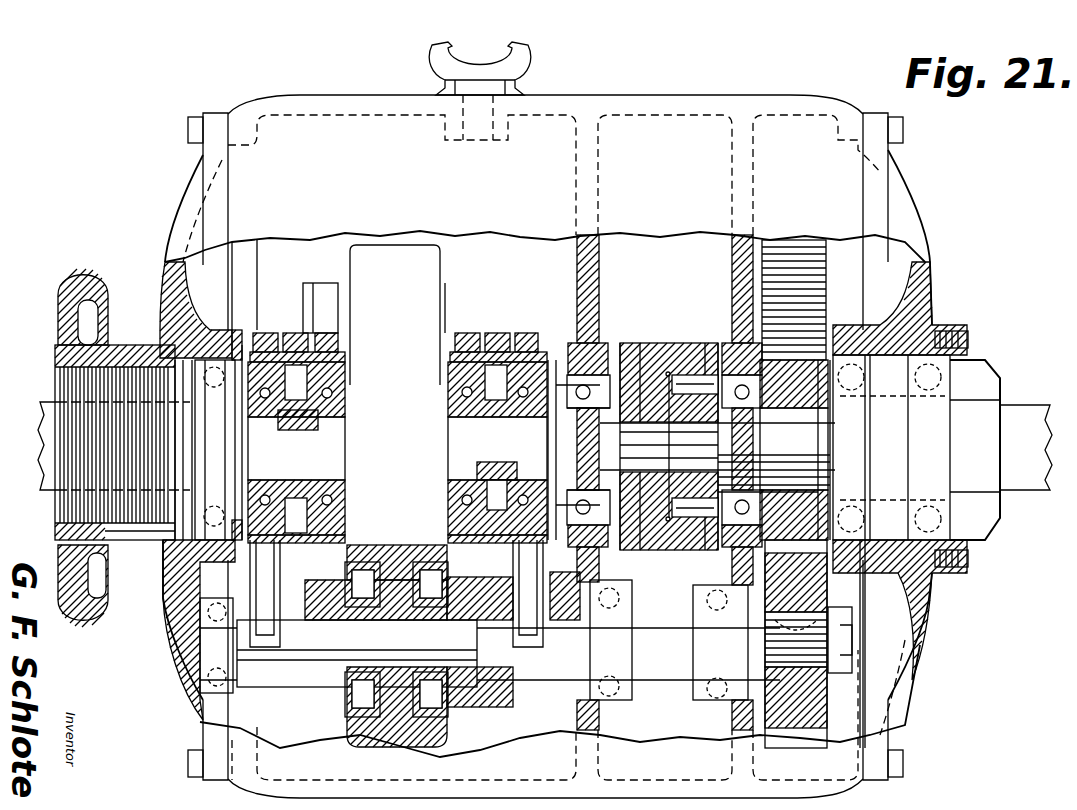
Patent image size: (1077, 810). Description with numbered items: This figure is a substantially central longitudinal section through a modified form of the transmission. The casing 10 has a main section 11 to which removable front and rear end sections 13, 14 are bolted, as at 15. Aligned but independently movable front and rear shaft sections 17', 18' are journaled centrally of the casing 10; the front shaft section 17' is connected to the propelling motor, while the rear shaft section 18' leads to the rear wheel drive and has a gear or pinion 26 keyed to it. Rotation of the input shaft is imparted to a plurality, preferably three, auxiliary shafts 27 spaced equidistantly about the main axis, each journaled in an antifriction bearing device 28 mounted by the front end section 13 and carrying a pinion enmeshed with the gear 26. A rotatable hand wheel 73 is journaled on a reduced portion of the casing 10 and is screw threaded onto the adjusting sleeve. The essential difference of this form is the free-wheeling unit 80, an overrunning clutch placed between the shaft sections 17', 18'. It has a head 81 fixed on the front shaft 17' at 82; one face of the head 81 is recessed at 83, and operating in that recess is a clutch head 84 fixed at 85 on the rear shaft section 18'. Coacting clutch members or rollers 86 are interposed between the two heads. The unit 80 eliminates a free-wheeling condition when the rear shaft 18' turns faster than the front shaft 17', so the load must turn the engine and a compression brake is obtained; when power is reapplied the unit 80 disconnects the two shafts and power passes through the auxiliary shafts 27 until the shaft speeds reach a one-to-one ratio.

The casing 10 is at (622, 95).
The main section 11 is at (357, 95).
The front end section 13 is at (182, 197).
The rear end section 14 is at (925, 225).
The bolt 15 is at (190, 131).
The front shaft section 17' is at (30, 421).
The rear shaft section 18' is at (1026, 416).
The gear or pinion 26 is at (805, 358).
The auxiliary shaft 27 is at (665, 680).
The antifriction bearing device 28 is at (825, 243).
The hand wheel 73 is at (78, 268).
The free-wheeling unit 80 is at (653, 331).
The head 81 is at (628, 343).
The fixing of head on shaft 82 is at (625, 438).
The recess 83 is at (706, 350).
The clutch head 84 is at (735, 413).
The fixing of clutch head on shaft 85 is at (720, 449).
The rollers 86 is at (685, 376).